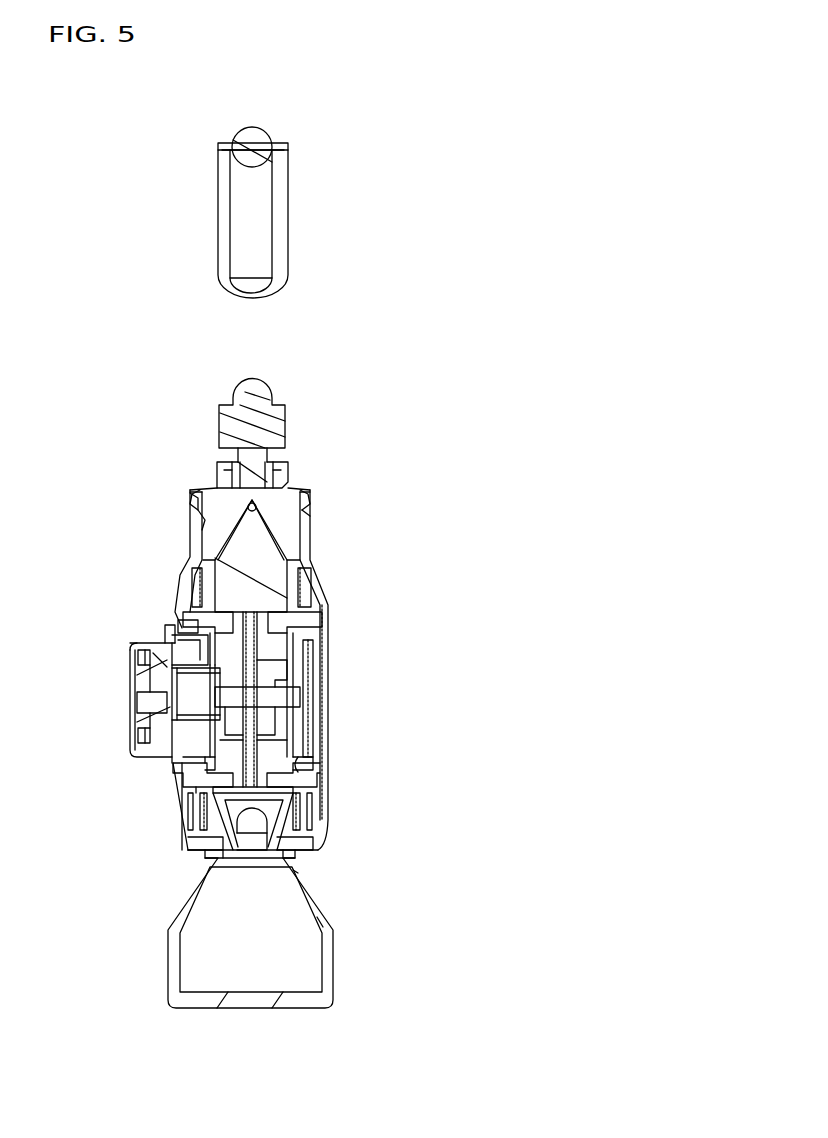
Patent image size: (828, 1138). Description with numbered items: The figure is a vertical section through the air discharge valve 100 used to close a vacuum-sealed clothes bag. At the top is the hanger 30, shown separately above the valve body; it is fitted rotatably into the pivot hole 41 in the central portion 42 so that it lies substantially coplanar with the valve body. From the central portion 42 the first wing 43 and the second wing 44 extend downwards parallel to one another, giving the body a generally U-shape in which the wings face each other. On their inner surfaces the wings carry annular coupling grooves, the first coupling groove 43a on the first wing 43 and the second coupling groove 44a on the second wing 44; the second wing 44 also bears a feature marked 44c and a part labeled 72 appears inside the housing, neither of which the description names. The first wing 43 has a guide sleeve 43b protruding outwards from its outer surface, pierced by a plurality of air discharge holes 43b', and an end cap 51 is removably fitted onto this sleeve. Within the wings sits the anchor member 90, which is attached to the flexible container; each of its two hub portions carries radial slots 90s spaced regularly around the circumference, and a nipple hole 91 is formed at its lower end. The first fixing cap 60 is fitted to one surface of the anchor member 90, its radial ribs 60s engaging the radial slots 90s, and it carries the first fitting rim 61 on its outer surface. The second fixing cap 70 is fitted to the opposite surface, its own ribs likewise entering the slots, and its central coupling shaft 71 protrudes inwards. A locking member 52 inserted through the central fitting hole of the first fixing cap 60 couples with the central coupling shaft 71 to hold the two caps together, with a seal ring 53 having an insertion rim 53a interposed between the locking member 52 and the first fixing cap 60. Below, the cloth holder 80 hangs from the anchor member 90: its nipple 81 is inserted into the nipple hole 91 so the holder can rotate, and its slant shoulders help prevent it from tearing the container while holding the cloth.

The hanger 30 is at (245, 130).
The air discharge valve 100 is at (375, 213).
The pivot hole 41 is at (232, 463).
The central portion 42 is at (215, 487).
The first wing 43 is at (190, 548).
The first coupling groove 43a is at (195, 590).
The guide sleeve 43b is at (134, 586).
The air discharge holes 43b' is at (108, 655).
The second wing 44 is at (315, 540).
The second coupling groove 44a is at (308, 600).
The latch portion 44c is at (298, 480).
The end cap 51 is at (135, 715).
The locking member 52 is at (135, 745).
The seal ring 53 is at (173, 638).
The insertion rim 53a is at (160, 648).
The first fixing cap 60 is at (182, 818).
The radial ribs 60s is at (180, 765).
The first fitting rim 61 is at (185, 625).
The second fixing cap 70 is at (318, 800).
The central coupling shaft 71 is at (270, 683).
The upper guide 72 is at (305, 625).
The cloth holder 80 is at (255, 1000).
The nipple 81 is at (210, 848).
The anchor member 90 is at (270, 570).
The radial slots 90s is at (308, 768).
The nipple hole 91 is at (280, 825).